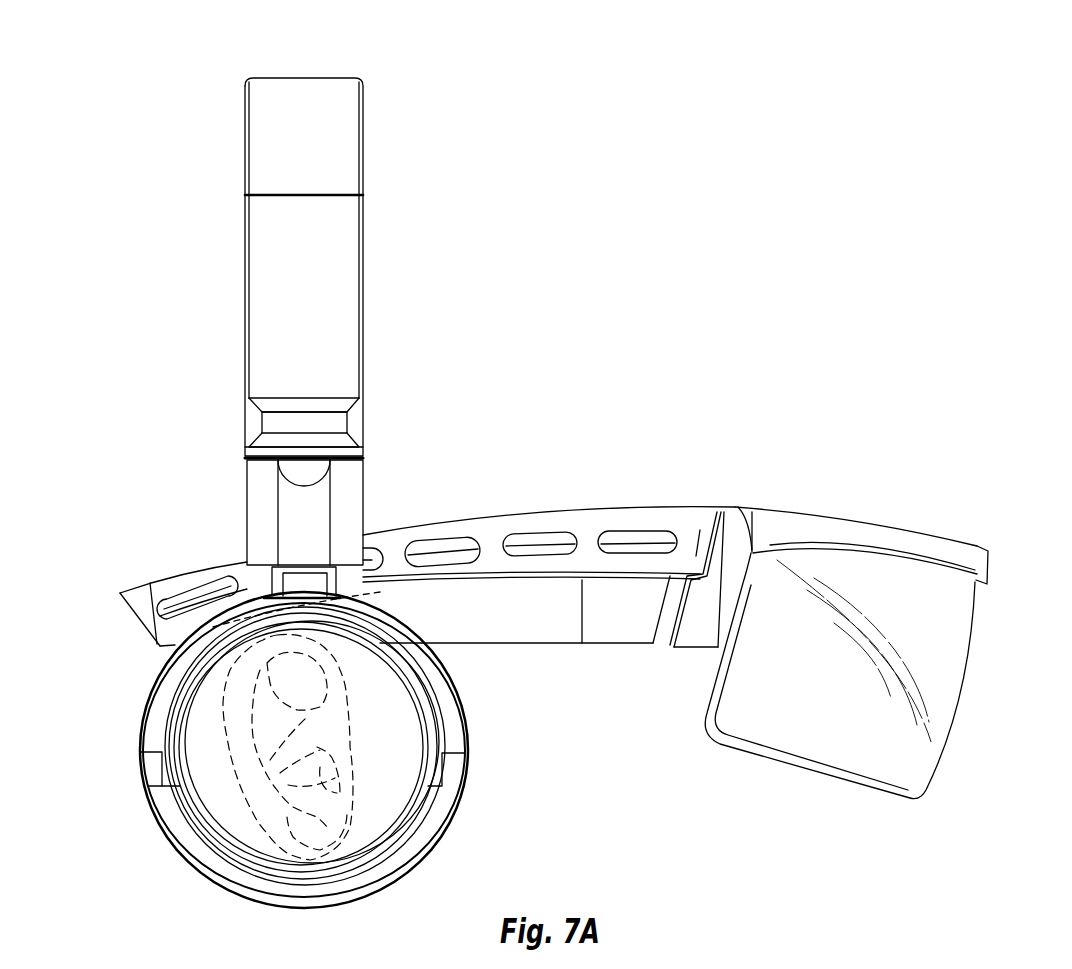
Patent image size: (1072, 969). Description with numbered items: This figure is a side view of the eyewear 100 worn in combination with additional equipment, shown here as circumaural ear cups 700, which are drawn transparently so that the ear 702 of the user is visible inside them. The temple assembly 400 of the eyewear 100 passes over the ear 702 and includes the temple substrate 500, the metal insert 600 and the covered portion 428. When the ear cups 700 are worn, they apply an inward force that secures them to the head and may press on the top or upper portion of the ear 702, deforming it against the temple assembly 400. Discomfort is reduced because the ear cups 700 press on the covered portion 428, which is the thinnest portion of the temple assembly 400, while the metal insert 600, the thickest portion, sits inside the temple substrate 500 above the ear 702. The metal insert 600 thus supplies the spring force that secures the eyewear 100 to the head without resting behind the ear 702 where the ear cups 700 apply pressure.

The eyewear 100 is at (922, 477).
The temple assembly 400 is at (120, 592).
The covered portion 428 is at (582, 630).
The temple substrate 500 is at (549, 555).
The metal insert 600 is at (445, 545).
The ear cups 700 is at (150, 808).
The ear 702 is at (220, 726).